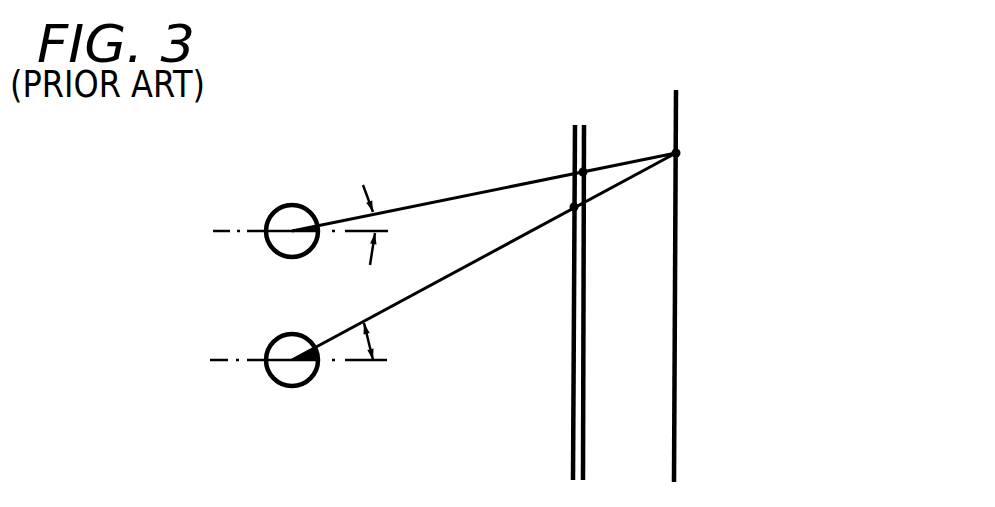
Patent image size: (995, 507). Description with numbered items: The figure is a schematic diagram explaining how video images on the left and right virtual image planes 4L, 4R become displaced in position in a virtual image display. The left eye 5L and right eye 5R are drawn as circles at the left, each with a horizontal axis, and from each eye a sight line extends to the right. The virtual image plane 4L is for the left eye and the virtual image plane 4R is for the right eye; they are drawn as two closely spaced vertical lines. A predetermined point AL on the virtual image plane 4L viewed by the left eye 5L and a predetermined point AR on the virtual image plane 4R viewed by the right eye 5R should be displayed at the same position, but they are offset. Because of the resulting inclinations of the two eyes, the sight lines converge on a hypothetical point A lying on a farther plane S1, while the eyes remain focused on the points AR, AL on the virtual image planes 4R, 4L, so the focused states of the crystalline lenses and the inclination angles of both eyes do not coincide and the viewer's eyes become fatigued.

The left eye 5L is at (290, 204).
The right eye 5R is at (288, 387).
The left virtual image plane 4L is at (585, 422).
The right virtual image plane 4R is at (573, 430).
The plane S1 is at (677, 412).
The hypothetical point A is at (495, 248).
The predetermined point on the left virtual image plane AL is at (599, 157).
The predetermined point on the right virtual image plane AR is at (558, 204).